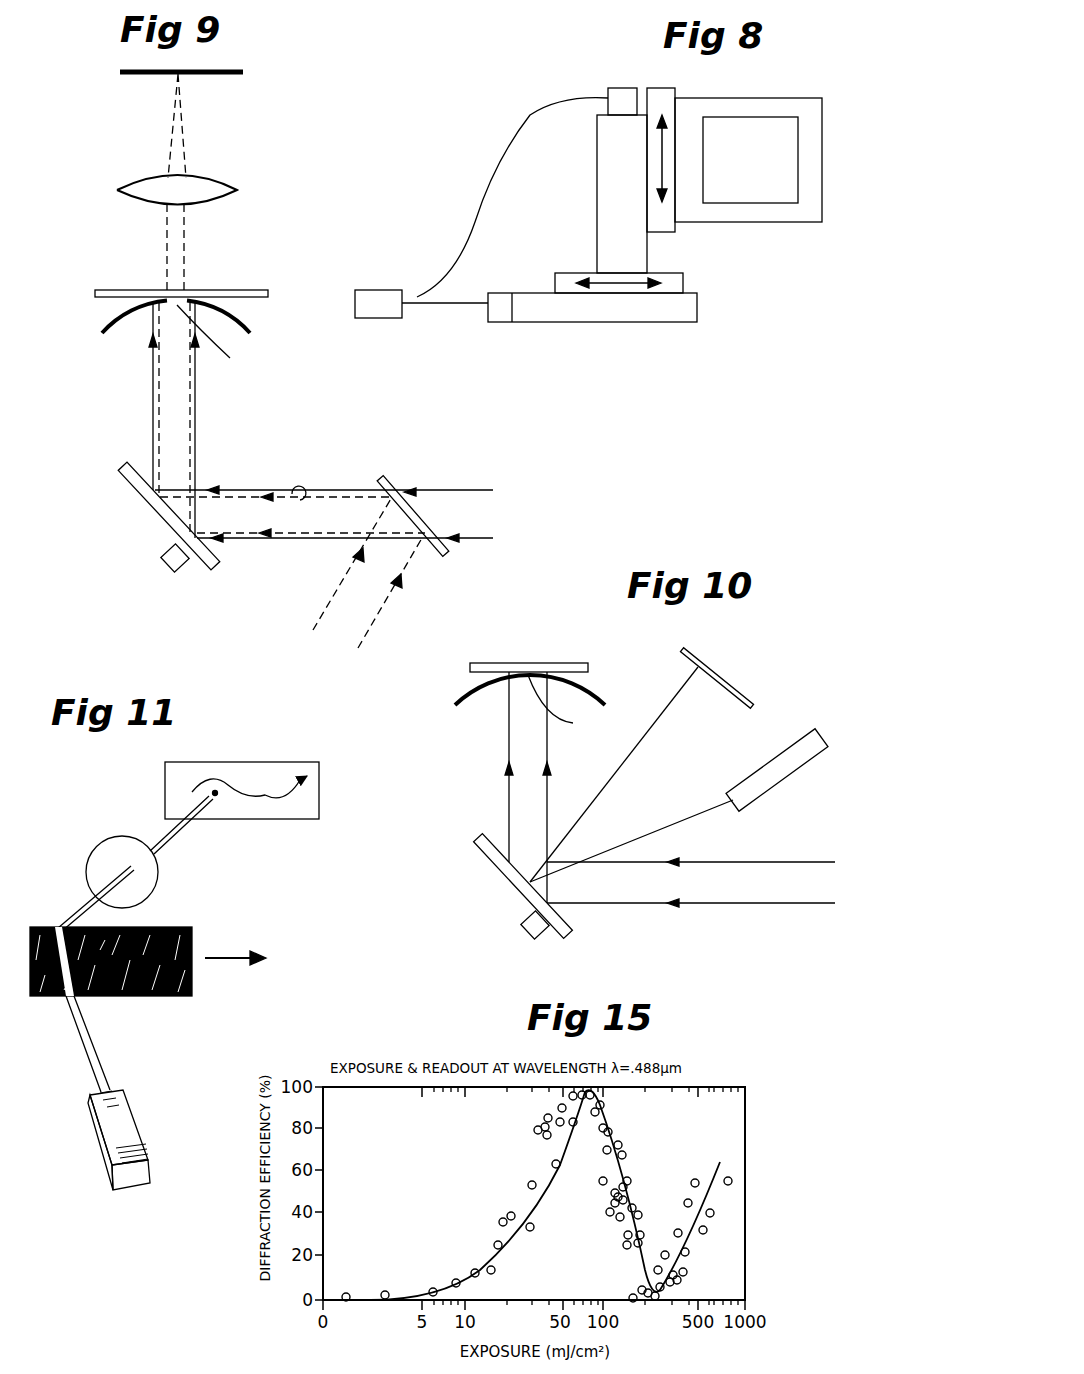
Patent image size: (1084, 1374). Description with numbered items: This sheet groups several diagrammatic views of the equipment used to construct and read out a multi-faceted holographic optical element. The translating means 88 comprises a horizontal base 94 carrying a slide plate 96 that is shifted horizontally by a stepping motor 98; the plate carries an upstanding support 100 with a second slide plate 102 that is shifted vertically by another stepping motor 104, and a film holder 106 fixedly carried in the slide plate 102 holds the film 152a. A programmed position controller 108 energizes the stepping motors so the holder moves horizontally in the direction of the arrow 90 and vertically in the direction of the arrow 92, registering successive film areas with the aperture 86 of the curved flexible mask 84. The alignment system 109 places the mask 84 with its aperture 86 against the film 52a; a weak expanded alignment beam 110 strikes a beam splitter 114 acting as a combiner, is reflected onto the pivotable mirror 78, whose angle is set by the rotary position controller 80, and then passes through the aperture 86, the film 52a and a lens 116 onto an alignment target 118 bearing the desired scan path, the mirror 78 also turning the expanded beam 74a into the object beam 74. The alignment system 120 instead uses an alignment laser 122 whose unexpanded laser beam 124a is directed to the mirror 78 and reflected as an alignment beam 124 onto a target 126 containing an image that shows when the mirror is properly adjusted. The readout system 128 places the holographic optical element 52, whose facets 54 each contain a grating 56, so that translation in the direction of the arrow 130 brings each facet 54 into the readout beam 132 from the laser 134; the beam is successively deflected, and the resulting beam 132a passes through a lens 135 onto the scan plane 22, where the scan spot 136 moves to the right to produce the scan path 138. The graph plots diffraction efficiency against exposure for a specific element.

In FIG. 9, the alignment target 118 is at (118, 72).
In FIG. 9, the lens 116 is at (218, 182).
In FIG. 9, the alignment system 109 is at (82, 266).
In FIG. 9, the film 52a is at (245, 290).
In FIG. 10, the film 52a is at (500, 663).
In FIG. 9, the curved flexible mask 84 is at (115, 325).
In FIG. 10, the curved flexible mask 84 is at (472, 690).
In FIG. 9, the aperture 86 is at (215, 342).
In FIG. 10, the aperture 86 is at (565, 708).
In FIG. 9, the object beam 74 is at (196, 408).
In FIG. 10, the object beam 74 is at (546, 800).
In FIG. 9, the expanded plane wave beam 74a is at (253, 540).
In FIG. 10, the expanded plane wave beam 74a is at (762, 862).
In FIG. 9, the alignment beam 110 is at (163, 400).
In FIG. 9, the pivotable mirror 78 is at (143, 503).
In FIG. 10, the pivotable mirror 78 is at (488, 858).
In FIG. 9, the rotary position controller 80 is at (167, 572).
In FIG. 10, the rotary position controller 80 is at (522, 931).
In FIG. 9, the beam splitter 114 is at (390, 478).
In FIG. 8, the translating means 88 is at (742, 280).
In FIG. 8, the stepping motor 104 is at (617, 90).
In FIG. 8, the upstanding support 100 is at (607, 203).
In FIG. 8, the second slide plate 102 is at (662, 98).
In FIG. 8, the arrow 92 is at (660, 160).
In FIG. 8, the film holder 106 is at (774, 158).
In FIG. 8, the film 152a is at (780, 188).
In FIG. 8, the slide plate 96 is at (675, 282).
In FIG. 8, the arrow 90 is at (628, 285).
In FIG. 8, the horizontal base 94 is at (578, 308).
In FIG. 8, the stepping motor 98 is at (493, 320).
In FIG. 8, the position controller 108 is at (372, 292).
In FIG. 10, the alignment beam 124 is at (673, 707).
In FIG. 10, the target 126 is at (722, 677).
In FIG. 10, the laser beam 124a is at (660, 818).
In FIG. 10, the alignment laser 122 is at (800, 742).
In FIG. 10, the alignment system 120 is at (797, 745).
In FIG. 11, the scan plane 22 is at (165, 781).
In FIG. 11, the scan path 138 is at (319, 807).
In FIG. 11, the scan spot 136 is at (215, 793).
In FIG. 11, the resulting beam 132a is at (167, 834).
In FIG. 11, the lens 135 is at (101, 842).
In FIG. 11, the holographic optical element 52 is at (111, 969).
In FIG. 11, the facet 54 is at (111, 960).
In FIG. 11, the grating 56 is at (34, 1000).
In FIG. 11, the readout beam 132 is at (86, 1052).
In FIG. 11, the arrow 130 is at (228, 950).
In FIG. 11, the readout system 128 is at (232, 988).
In FIG. 11, the laser 134 is at (99, 1160).